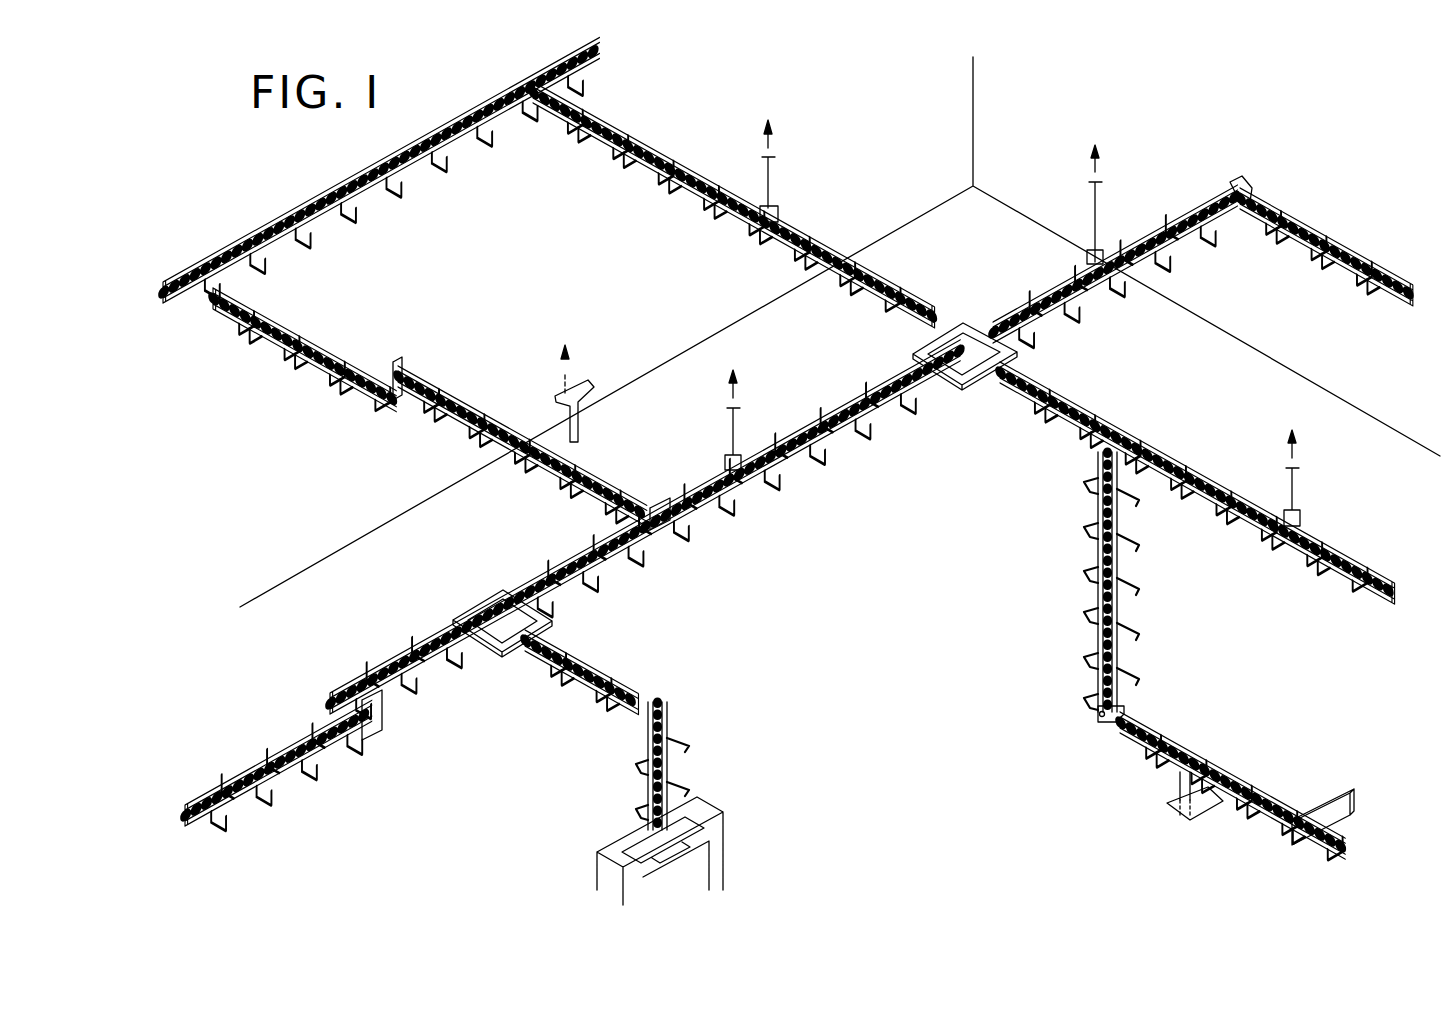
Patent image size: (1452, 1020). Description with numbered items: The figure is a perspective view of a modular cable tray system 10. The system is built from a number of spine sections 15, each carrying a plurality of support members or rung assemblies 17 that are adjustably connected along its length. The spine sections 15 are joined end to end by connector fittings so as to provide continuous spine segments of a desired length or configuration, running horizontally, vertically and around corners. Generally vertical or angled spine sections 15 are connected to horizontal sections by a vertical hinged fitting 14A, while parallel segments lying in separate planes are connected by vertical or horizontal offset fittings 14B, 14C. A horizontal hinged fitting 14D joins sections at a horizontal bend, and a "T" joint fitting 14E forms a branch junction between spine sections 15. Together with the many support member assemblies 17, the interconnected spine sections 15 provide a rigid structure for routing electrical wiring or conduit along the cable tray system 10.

The modular cable tray system 10 is at (928, 672).
The vertical hinged fitting 14A is at (1104, 718).
The vertical or horizontal offset fitting 14B is at (400, 400).
The vertical or horizontal offset fitting 14C is at (377, 730).
The horizontal hinged fitting 14D is at (1243, 186).
The "T" joint fitting 14E is at (663, 527).
The spine section 15 is at (903, 302).
The support member assemblies 17 is at (598, 160).